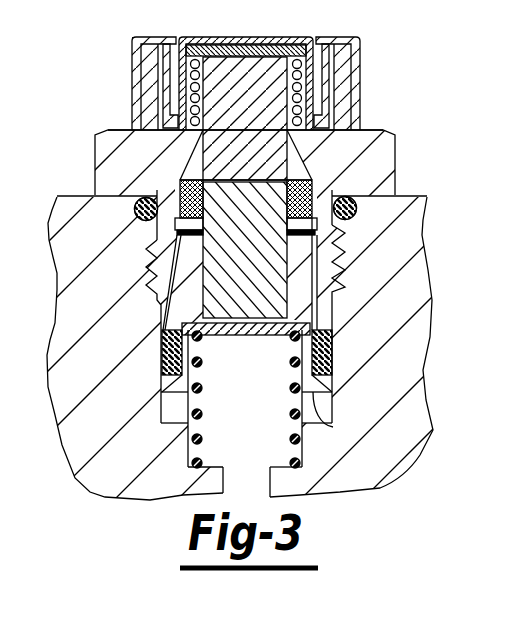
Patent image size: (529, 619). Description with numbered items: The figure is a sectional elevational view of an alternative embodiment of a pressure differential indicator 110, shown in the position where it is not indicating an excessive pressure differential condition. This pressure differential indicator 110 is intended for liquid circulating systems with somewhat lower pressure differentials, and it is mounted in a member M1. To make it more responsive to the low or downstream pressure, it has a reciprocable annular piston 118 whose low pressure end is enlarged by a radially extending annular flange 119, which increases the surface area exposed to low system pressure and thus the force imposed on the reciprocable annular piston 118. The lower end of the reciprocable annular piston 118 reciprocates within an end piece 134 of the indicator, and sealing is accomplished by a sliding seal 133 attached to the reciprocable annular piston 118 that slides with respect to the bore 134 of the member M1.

The pressure differential indicator 110 is at (376, 108).
The member M1 is at (437, 206).
The reciprocable annular piston 118 is at (345, 268).
The sliding seal 133 is at (335, 348).
The end piece 134 is at (333, 405).
The radially extending annular flange 119 is at (333, 427).